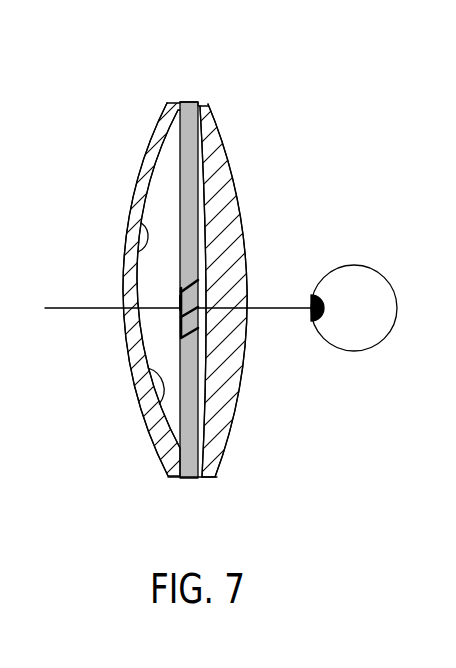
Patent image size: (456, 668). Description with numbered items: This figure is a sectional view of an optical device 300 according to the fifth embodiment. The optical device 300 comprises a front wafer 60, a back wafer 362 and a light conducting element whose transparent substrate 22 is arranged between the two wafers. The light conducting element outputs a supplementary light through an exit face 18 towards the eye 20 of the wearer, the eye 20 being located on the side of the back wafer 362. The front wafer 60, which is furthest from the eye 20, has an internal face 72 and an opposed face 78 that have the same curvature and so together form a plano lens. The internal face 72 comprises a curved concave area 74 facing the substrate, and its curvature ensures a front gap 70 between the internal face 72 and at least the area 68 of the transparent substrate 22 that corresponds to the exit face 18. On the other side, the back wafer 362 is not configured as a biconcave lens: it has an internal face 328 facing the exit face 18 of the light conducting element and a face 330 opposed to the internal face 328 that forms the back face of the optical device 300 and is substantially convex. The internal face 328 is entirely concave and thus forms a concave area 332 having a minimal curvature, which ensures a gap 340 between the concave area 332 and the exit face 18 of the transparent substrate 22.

The optical device 300 is at (253, 152).
The transparent substrate 22 is at (187, 120).
The concave area 332 is at (217, 131).
The face opposed to the internal face 330 is at (225, 457).
The front wafer 60 is at (152, 173).
The opposed face 78 is at (130, 365).
The internal face 72 is at (147, 247).
The concave area 74 is at (155, 408).
The front gap 70 is at (173, 280).
The area corresponding to the exit face 68 is at (180, 303).
The exit face 18 is at (198, 320).
The gap 340 is at (205, 243).
The back wafer 362 is at (223, 200).
The internal face 328 is at (207, 392).
The eye 20 is at (370, 323).